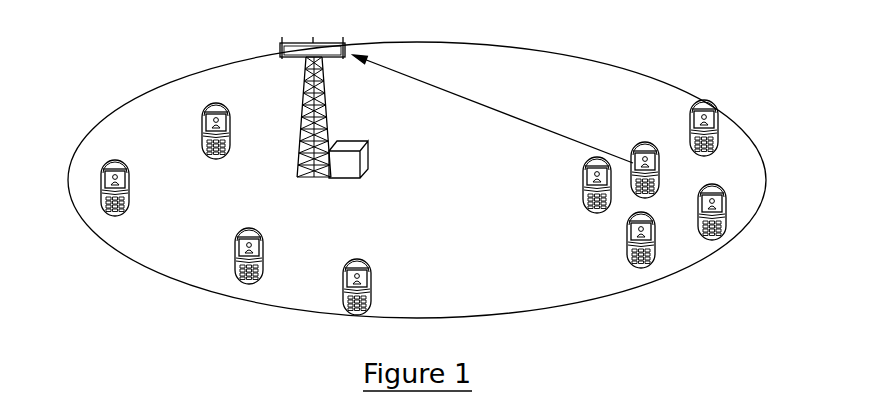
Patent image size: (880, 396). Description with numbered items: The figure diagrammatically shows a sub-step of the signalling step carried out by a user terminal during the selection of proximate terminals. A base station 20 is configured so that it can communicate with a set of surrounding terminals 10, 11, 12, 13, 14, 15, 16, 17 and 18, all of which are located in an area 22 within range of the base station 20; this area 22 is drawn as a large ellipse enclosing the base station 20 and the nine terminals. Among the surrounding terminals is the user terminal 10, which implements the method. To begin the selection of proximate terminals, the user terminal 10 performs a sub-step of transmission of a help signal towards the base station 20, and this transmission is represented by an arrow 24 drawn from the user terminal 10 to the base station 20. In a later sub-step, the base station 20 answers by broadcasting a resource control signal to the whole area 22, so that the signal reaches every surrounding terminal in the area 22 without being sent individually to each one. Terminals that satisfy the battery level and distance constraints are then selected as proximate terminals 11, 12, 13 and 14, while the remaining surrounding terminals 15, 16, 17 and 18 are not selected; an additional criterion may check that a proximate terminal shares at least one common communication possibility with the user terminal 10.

The user terminal 10 is at (657, 190).
The proximate terminal 11 is at (597, 212).
The proximate terminal 12 is at (643, 268).
The proximate terminal 13 is at (726, 216).
The proximate terminal 14 is at (718, 133).
The surrounding terminal 15 is at (355, 314).
The surrounding terminal 16 is at (240, 276).
The surrounding terminal 17 is at (103, 195).
The surrounding terminal 18 is at (217, 103).
The base station 20 is at (324, 104).
The area 22 is at (527, 48).
The arrow 24 is at (537, 126).